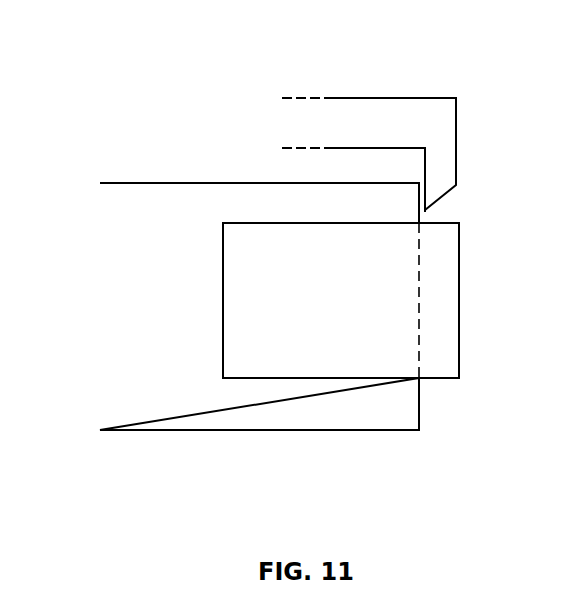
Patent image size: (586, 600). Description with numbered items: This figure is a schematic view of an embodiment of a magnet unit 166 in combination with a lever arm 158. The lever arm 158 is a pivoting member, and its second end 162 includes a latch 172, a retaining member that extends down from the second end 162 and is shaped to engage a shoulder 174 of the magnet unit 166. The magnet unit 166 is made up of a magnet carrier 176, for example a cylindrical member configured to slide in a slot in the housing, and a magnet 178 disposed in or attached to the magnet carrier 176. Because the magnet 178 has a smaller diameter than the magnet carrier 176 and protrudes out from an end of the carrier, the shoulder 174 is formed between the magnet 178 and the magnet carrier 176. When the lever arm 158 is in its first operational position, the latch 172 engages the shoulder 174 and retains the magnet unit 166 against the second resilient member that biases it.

The lever arm 158 is at (313, 121).
The second end 162 is at (477, 62).
The magnet unit 166 is at (122, 492).
The latch 172 is at (445, 165).
The shoulder 174 is at (421, 216).
The magnet carrier 176 is at (330, 432).
The magnet 178 is at (460, 352).